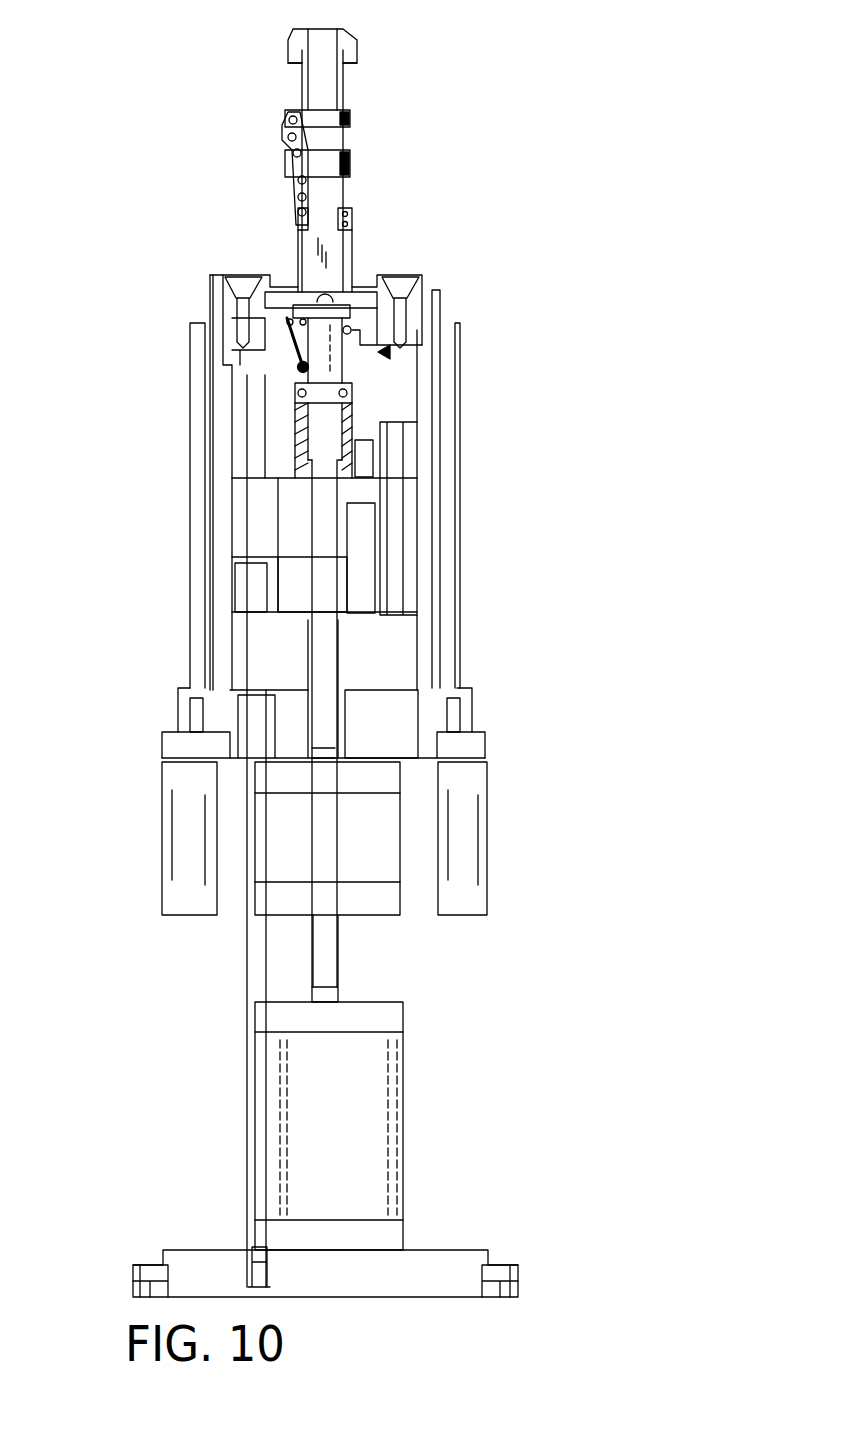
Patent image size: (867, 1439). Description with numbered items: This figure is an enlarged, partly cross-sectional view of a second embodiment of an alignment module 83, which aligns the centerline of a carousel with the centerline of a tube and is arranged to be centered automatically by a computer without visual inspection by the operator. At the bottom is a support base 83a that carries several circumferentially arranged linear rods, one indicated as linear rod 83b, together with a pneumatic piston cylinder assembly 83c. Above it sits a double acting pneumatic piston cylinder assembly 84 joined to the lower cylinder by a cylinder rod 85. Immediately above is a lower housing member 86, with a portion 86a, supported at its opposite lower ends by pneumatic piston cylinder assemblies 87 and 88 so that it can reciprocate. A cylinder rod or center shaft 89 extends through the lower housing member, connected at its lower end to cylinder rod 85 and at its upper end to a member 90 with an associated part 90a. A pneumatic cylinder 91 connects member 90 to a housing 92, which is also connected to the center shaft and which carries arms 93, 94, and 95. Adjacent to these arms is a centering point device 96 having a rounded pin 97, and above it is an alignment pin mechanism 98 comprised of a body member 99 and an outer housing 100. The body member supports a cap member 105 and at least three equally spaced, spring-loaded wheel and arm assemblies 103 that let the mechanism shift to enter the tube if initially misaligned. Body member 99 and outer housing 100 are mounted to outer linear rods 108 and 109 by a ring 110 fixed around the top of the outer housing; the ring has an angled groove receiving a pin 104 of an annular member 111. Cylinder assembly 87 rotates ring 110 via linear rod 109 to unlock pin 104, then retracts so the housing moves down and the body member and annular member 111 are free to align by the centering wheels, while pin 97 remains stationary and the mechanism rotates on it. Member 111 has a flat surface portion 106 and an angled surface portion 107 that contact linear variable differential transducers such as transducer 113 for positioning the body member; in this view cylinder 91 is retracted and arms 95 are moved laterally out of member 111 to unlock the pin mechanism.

The alignment module 83 is at (320, 976).
The support base 83a is at (433, 1262).
The linear rod 83b is at (247, 1118).
The pneumatic piston cylinder assembly 83c is at (387, 1098).
The double acting pneumatic piston cylinder assembly 84 is at (363, 917).
The cylinder rod 85 is at (333, 972).
The lower housing member 86 is at (420, 748).
The mounting block portion 86a is at (230, 735).
The pneumatic piston cylinder assembly 87 is at (463, 858).
The pneumatic piston cylinder assembly 88 is at (175, 832).
The center shaft 89 is at (332, 650).
The member 90 is at (323, 588).
The slide block guide 90a is at (237, 597).
The pneumatic cylinder 91 is at (398, 505).
The housing 92 is at (368, 460).
The arm 93 is at (385, 355).
The arm 94 is at (390, 352).
The arm 95 is at (342, 316).
The centering point device 96 is at (328, 368).
The pin 97 is at (326, 296).
The alignment pin mechanism 98 is at (296, 151).
The body member 99 is at (333, 242).
The outer housing 100 is at (438, 320).
The wheel and arm assembly 103 is at (262, 133).
The pin 104 is at (228, 352).
The cap member 105 is at (293, 50).
The flat surface portion 106 is at (268, 375).
The angled surface portion 107 is at (352, 342).
The outer linear rod 108 is at (412, 460).
The outer linear rod 109 is at (200, 540).
The ring 110 is at (238, 372).
The annular member 111 is at (228, 330).
The linear variable differential transducer 113 is at (372, 535).